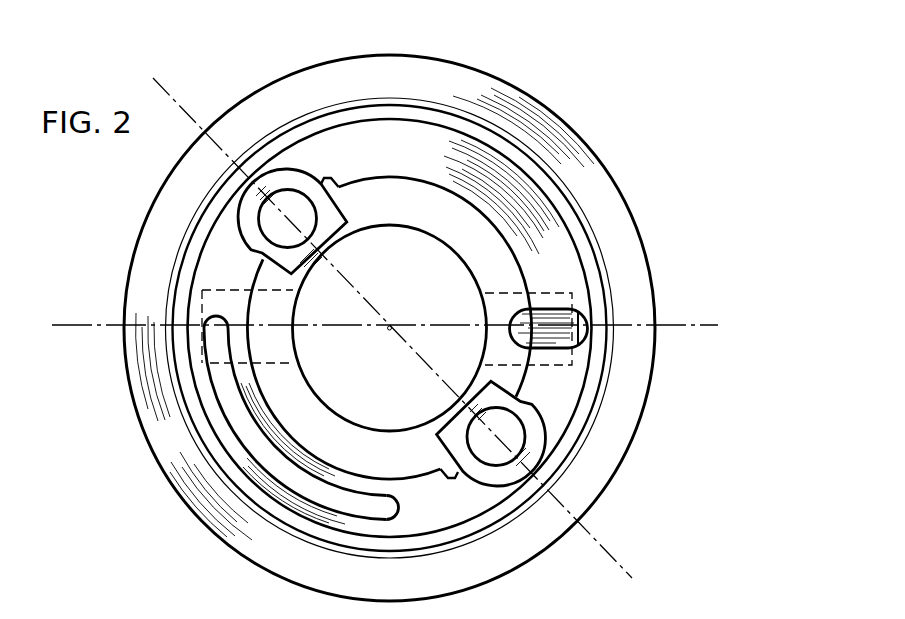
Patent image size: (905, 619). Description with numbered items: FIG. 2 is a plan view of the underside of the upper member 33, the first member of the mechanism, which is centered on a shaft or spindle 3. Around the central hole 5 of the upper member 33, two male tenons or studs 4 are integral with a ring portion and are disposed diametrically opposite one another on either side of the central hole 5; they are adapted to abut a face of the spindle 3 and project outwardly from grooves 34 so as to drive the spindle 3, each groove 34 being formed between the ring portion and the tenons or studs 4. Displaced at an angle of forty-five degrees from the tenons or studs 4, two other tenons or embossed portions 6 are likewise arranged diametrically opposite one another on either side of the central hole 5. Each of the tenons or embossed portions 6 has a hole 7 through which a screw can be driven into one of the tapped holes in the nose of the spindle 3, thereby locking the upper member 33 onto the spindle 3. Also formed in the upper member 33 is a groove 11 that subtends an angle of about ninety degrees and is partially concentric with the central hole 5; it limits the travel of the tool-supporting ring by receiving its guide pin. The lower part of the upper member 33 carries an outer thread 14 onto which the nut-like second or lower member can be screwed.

The upper member 33 is at (533, 108).
The outer thread 14 is at (585, 232).
The tenons or embossed portions 6 is at (330, 221).
The central hole 5 is at (341, 362).
The hole 7 is at (292, 192).
The groove 11 is at (242, 437).
The groove 34 is at (578, 340).
The tenons or studs 4 is at (208, 82).
The spindle 3 is at (91, 280).